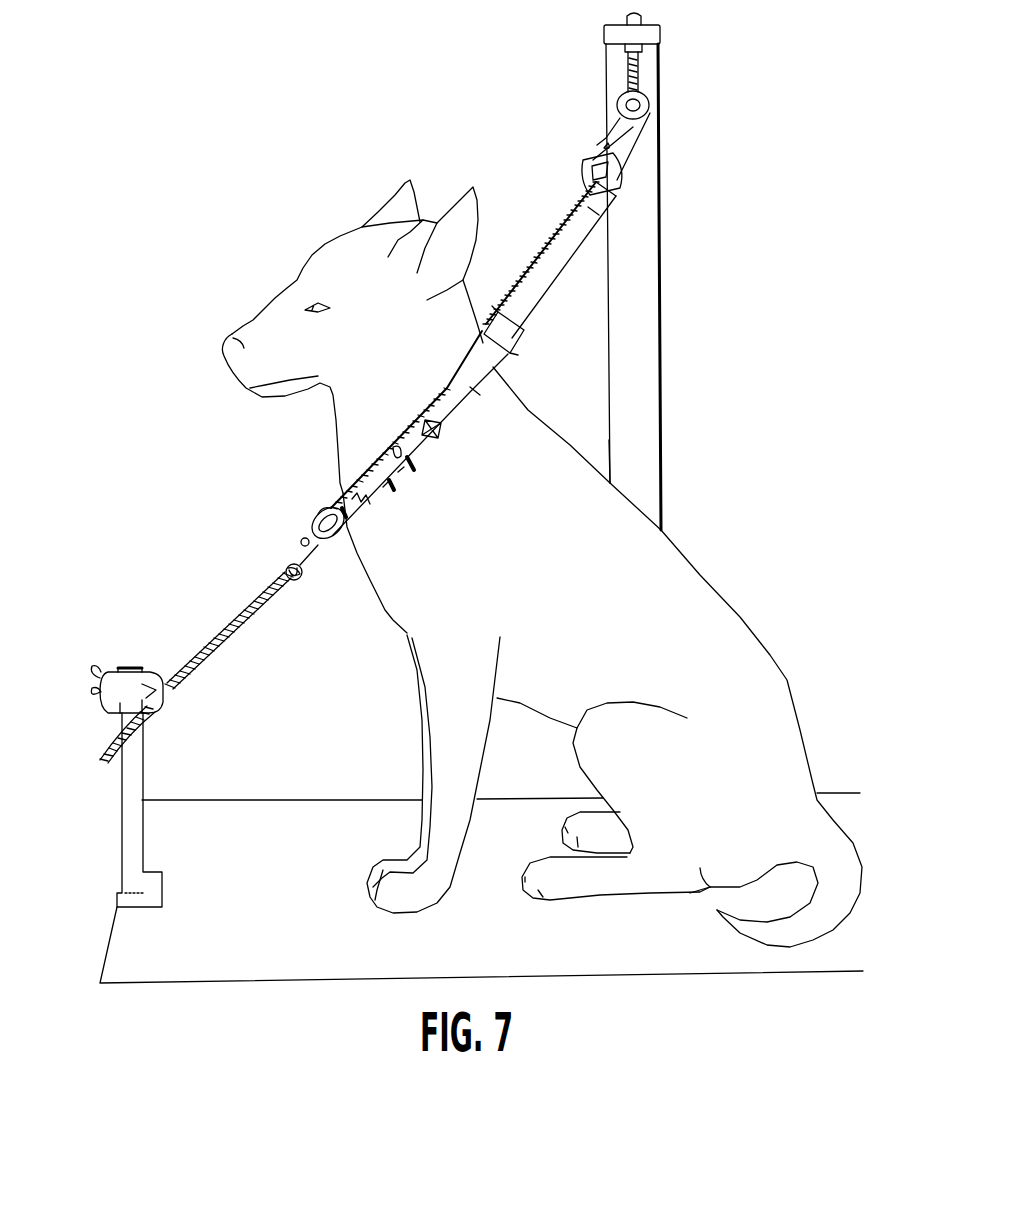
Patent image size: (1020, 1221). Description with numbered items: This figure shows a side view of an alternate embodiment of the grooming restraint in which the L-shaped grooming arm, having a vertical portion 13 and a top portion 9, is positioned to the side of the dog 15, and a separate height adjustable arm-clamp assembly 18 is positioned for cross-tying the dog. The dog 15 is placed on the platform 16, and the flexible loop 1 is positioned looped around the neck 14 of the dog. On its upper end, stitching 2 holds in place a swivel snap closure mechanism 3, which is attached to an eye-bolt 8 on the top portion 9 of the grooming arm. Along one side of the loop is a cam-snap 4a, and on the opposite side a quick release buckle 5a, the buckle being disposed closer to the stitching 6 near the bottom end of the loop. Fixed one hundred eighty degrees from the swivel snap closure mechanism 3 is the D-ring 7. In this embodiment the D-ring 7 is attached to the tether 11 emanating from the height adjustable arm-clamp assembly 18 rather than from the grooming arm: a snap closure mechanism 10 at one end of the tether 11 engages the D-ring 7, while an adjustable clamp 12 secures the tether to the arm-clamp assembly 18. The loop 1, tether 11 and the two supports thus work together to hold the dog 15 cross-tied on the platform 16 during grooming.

The flexible loop 1 is at (491, 387).
The stitching 2 is at (604, 214).
The swivel snap closure mechanism 3 is at (623, 181).
The buckle slider 4a is at (521, 341).
The collar ring 5a is at (374, 464).
The stitching 6 is at (290, 496).
The D-ring 7 is at (343, 538).
The eye-bolt 8 is at (651, 97).
The top L-portion of the grooming arm 9 is at (667, 33).
The snap closure mechanism 10 is at (300, 548).
The tether 11 is at (232, 637).
The adjustable clamp 12 is at (160, 700).
The vertical portion of the grooming arm 13 is at (662, 316).
The neck 14 is at (332, 402).
The dog 15 is at (620, 488).
The platform 16 is at (284, 822).
The height adjustable arm-clamp assembly 18 is at (110, 830).